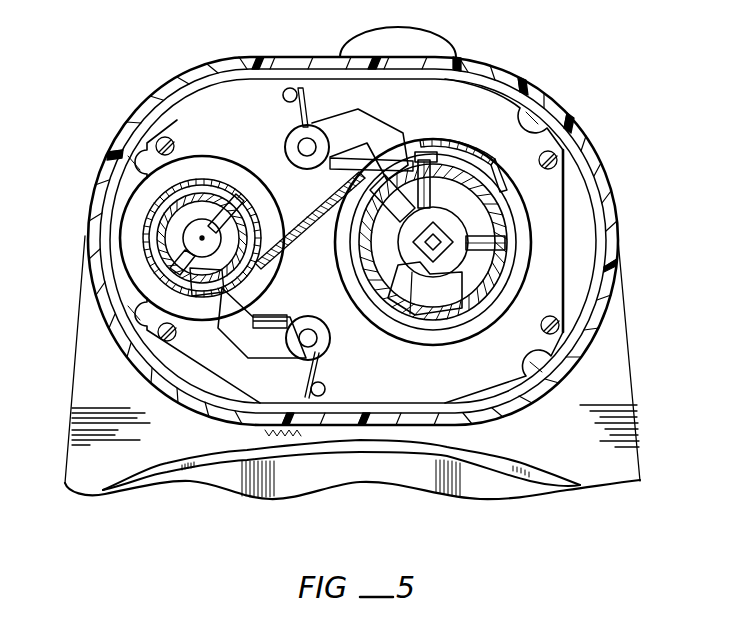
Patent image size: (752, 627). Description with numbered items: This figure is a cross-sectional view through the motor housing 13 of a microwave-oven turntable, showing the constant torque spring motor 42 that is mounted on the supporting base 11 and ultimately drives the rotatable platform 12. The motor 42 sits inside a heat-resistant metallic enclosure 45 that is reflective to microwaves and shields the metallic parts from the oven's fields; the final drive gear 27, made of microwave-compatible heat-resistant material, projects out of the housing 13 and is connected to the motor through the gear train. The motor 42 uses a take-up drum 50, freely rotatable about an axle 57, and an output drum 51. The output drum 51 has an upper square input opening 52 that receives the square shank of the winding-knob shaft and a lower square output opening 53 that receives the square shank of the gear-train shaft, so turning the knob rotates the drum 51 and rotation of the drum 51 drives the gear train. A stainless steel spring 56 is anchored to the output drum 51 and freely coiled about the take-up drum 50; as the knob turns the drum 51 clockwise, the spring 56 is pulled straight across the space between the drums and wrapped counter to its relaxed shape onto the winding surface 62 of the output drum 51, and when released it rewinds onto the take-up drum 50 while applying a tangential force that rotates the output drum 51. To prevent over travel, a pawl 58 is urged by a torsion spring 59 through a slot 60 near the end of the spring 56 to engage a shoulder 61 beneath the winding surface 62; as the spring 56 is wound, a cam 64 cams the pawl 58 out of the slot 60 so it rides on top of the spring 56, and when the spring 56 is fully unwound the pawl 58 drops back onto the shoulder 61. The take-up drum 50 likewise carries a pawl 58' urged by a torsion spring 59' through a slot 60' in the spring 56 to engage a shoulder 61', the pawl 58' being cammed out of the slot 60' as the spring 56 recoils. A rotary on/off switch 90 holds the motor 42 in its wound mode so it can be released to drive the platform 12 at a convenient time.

The rotary on/off switch 90 is at (360, 46).
The motor housing 13 is at (137, 117).
The axle 57 is at (202, 236).
The torsion spring 59 is at (311, 107).
The pawl 58 is at (346, 133).
The slot 60 is at (378, 129).
The shoulder 61 is at (463, 141).
The metallic enclosure 45 is at (576, 133).
The spring motor 42 is at (575, 201).
The output drum 51 is at (548, 233).
The take-up drum 50 is at (127, 231).
The spring 56 is at (307, 214).
The input opening 52 is at (458, 218).
The cam 64 is at (408, 231).
The output opening 53 is at (438, 266).
The slot 60' is at (278, 305).
The shoulder 61' is at (205, 309).
The winding surface 62 is at (462, 340).
The pawl 58' is at (274, 341).
The torsion spring 59' is at (337, 375).
The final drive gear 27 is at (348, 432).
The supporting base 11 is at (82, 491).
The rotatable platform 12 is at (527, 487).